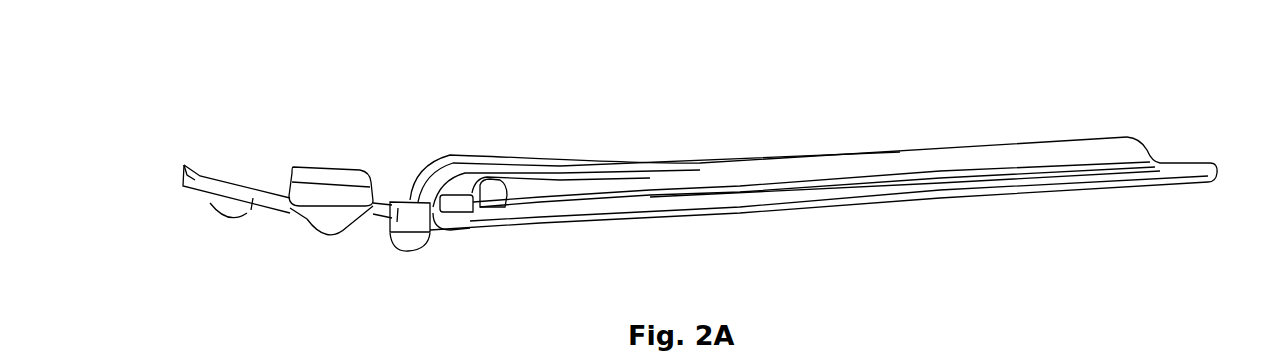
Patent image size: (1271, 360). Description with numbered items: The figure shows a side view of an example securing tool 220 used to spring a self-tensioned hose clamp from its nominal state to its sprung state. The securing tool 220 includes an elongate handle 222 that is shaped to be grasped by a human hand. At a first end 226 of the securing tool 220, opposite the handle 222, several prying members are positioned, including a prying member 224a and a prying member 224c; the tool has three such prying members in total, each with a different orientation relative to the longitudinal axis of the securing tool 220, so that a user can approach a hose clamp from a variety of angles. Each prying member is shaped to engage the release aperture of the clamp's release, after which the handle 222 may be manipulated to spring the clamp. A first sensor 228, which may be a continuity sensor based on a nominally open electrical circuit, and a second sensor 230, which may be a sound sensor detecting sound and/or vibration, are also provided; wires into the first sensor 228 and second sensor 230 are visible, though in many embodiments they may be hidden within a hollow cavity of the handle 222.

The securing tool 220 is at (291, 124).
The elongate handle 222 is at (897, 152).
The prying member 224a is at (183, 166).
The prying member 224c is at (328, 172).
The first end 226 is at (178, 148).
The first sensor 228 is at (407, 250).
The second sensor 230 is at (456, 206).